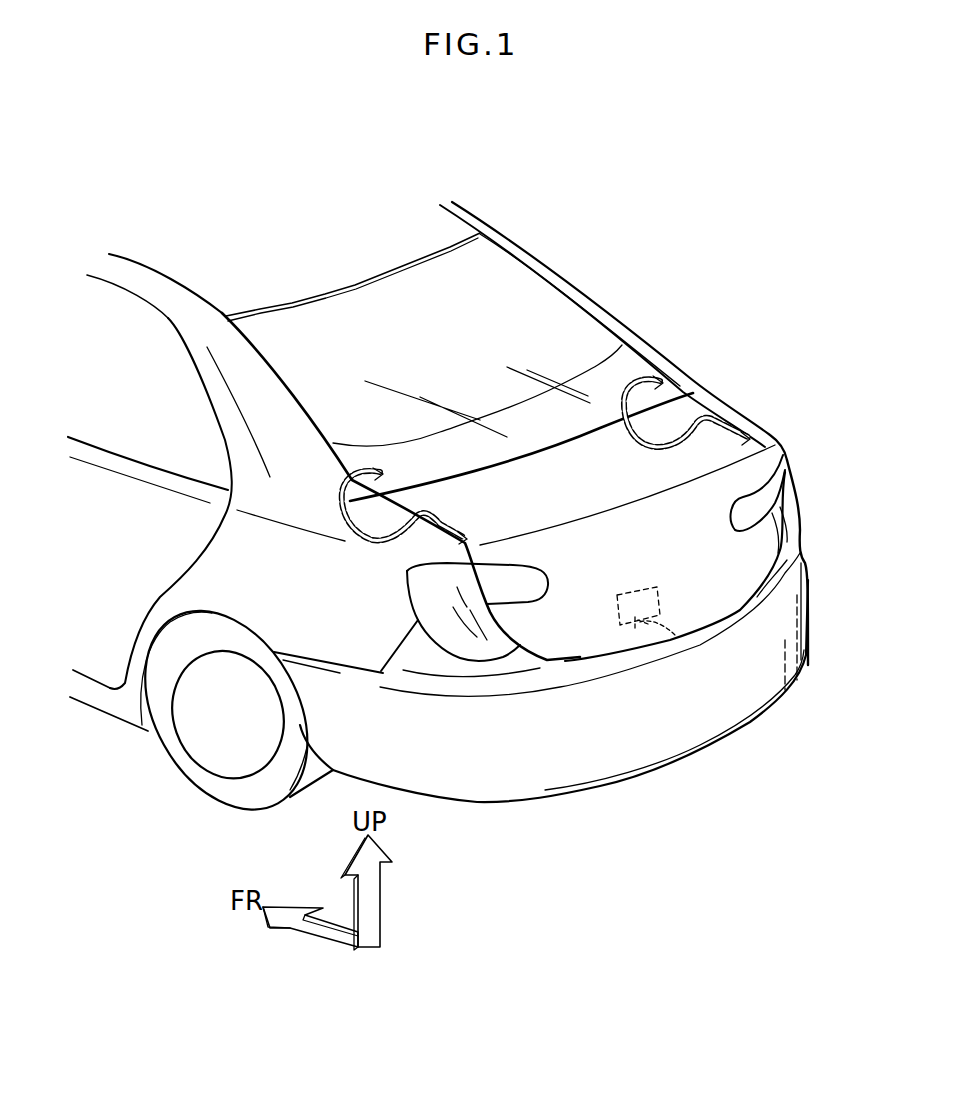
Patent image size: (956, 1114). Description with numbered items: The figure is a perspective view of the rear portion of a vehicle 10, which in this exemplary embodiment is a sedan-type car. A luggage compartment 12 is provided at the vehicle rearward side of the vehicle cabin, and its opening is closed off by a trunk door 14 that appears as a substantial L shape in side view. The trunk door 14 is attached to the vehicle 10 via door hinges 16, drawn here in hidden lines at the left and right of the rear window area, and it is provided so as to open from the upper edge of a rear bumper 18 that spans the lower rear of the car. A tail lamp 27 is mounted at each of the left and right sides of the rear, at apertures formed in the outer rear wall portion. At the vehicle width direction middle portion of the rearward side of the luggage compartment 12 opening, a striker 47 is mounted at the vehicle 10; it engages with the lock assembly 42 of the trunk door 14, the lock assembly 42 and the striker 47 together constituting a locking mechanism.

The vehicle 10 is at (463, 180).
The luggage compartment 12 is at (654, 480).
The trunk door 14 is at (726, 551).
The door hinges 16 is at (633, 378).
The rear bumper 18 is at (745, 713).
The tail lamp 27 is at (520, 590).
The lock assembly 42 is at (645, 590).
The striker 47 is at (650, 620).